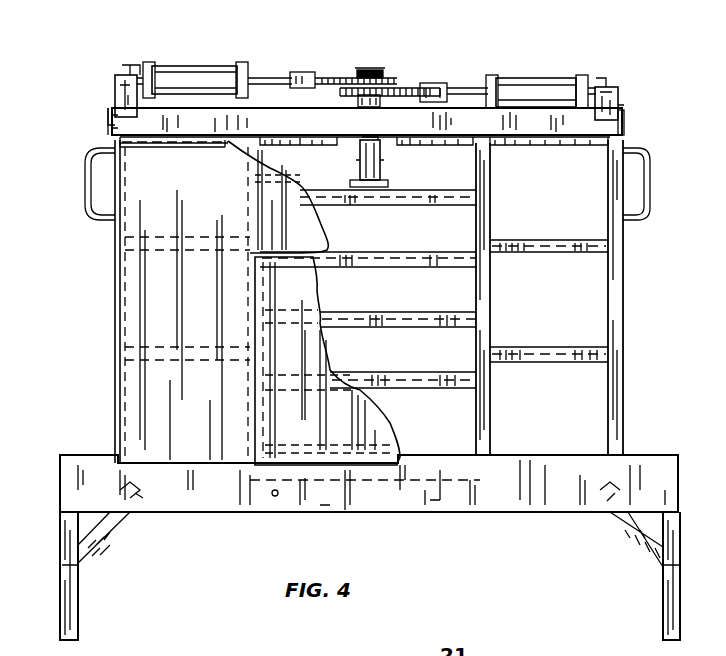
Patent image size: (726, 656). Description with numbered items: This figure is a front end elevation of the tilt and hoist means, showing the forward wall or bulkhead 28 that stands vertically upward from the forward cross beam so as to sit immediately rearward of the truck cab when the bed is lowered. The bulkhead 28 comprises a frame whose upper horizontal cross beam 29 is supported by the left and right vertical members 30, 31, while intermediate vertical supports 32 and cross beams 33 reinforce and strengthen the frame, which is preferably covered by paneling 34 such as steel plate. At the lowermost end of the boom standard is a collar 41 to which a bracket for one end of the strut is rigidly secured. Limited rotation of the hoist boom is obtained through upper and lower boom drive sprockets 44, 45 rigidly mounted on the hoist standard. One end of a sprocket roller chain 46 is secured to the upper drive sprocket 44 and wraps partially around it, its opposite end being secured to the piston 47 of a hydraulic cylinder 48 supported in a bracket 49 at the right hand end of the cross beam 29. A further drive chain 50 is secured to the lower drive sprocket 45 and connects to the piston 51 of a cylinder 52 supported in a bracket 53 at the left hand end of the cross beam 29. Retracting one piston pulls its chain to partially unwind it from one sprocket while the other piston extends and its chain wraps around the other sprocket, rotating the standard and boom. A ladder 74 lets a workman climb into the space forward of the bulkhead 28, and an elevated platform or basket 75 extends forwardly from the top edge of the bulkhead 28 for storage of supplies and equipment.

The bulkhead 28 is at (625, 312).
The upper horizontal cross beam 29 is at (625, 125).
The left vertical member 30 is at (624, 412).
The right vertical member 31 is at (118, 315).
The intermediate vertical supports 32 is at (492, 338).
The cross beams 33 is at (406, 203).
The paneling 34 is at (380, 430).
The collar 41 is at (383, 163).
The upper boom drive sprocket 44 is at (405, 86).
The lower boom drive sprocket 45 is at (340, 85).
The sprocket roller chain 46 is at (346, 76).
The piston 47 is at (272, 78).
The hydraulic cylinder 48 is at (197, 67).
The bracket 49 is at (113, 88).
The drive chain 50 is at (415, 92).
The piston 51 is at (470, 85).
The cylinder 52 is at (561, 78).
The bracket 53 is at (620, 102).
The ladder 74 is at (78, 600).
The elevated platform or basket 75 is at (522, 145).